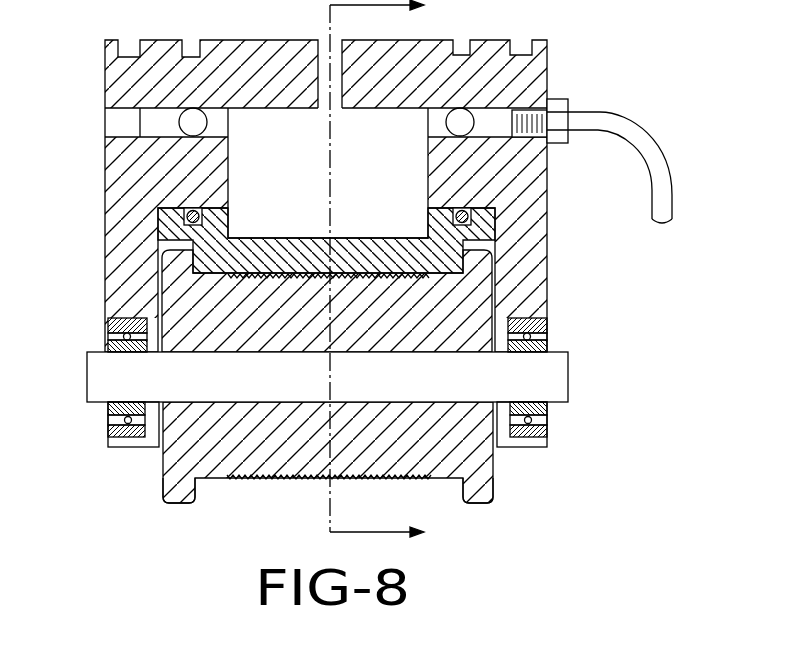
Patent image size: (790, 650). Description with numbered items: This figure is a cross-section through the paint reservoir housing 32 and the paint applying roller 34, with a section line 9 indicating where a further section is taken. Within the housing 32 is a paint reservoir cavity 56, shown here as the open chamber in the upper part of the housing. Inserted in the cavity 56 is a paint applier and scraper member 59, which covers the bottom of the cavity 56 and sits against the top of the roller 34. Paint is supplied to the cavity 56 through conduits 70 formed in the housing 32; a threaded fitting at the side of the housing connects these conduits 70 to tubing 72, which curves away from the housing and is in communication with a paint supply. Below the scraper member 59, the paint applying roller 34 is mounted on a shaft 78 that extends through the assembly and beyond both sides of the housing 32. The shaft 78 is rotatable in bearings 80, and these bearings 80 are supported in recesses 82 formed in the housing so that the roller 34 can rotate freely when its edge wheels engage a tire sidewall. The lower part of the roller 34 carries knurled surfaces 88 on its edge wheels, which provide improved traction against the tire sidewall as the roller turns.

The section line 9- 9 is at (386, 273).
The paint reservoir housing 32 is at (133, 248).
The paint applying roller 34 is at (477, 462).
The paint reservoir cavity 56 is at (262, 152).
The paint applier and scraper member 59 is at (547, 200).
The conduits 70 is at (500, 118).
The tubing 72 is at (645, 152).
The shaft 78 is at (552, 370).
The bearings 80 is at (548, 423).
The recesses 82 is at (108, 330).
The knurled surfaces 88 is at (178, 503).